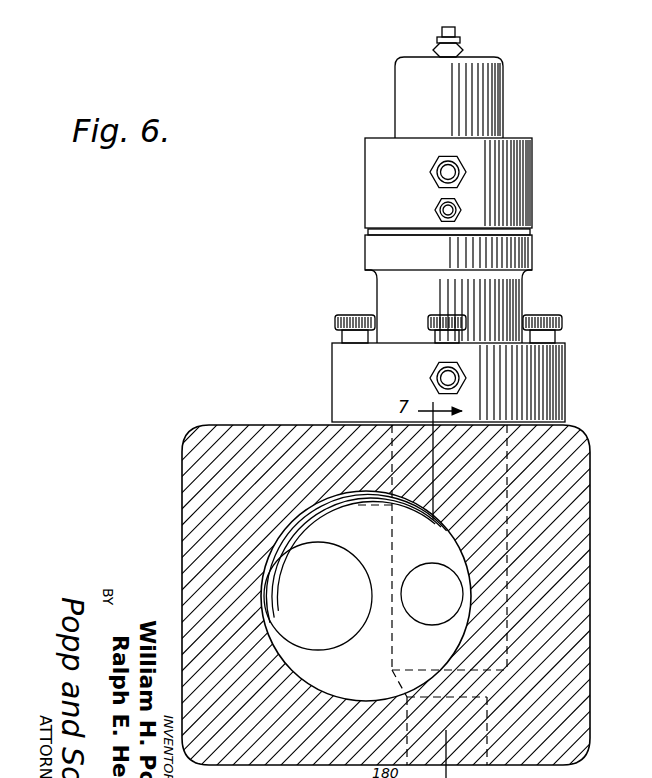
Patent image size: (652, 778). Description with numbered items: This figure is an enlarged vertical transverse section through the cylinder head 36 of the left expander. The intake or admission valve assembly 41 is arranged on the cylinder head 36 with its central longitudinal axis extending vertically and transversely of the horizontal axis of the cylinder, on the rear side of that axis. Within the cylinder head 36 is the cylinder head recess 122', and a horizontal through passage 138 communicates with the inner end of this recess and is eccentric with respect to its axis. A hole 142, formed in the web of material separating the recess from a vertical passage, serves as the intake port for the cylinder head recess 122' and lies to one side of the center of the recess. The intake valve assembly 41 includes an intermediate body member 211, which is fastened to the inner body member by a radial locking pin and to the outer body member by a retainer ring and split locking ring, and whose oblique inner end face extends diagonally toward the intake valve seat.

The intake valve assembly 41 is at (358, 178).
The intermediate body member 211 is at (332, 376).
The cylinder head 36 is at (180, 468).
The horizontal through passage 138 is at (313, 650).
The hole 142 is at (430, 624).
The cylinder head recess 122' is at (366, 596).